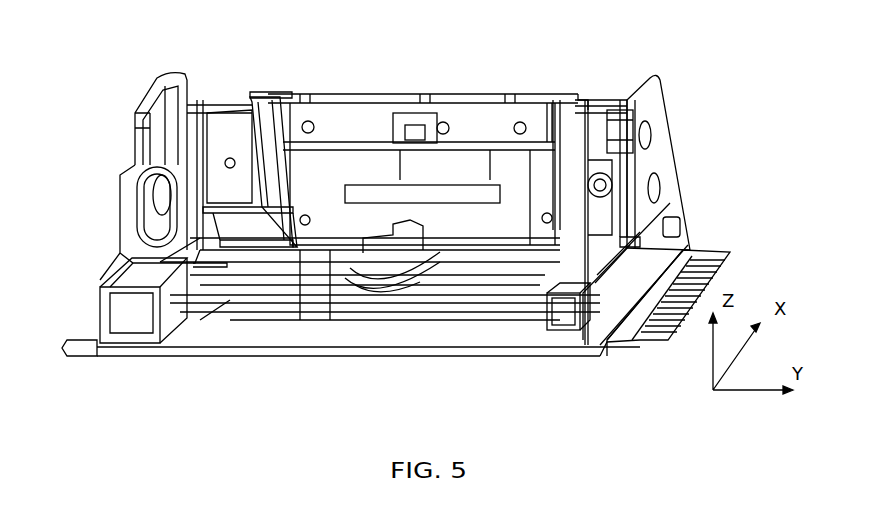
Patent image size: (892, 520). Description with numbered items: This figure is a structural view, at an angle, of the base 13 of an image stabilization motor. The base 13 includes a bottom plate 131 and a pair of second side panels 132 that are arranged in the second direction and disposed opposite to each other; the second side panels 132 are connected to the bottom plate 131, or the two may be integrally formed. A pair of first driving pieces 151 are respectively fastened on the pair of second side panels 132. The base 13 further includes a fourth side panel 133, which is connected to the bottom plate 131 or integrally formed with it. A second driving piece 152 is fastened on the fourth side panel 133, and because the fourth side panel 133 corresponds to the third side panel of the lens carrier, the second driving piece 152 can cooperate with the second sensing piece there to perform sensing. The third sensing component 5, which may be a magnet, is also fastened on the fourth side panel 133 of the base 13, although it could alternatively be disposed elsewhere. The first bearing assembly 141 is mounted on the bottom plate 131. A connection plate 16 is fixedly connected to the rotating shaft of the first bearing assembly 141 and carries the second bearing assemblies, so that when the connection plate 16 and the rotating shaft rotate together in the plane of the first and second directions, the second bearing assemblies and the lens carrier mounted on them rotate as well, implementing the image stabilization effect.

The base 13 is at (666, 37).
The bottom plate 131 is at (193, 344).
The second side panels 132 is at (158, 84).
The fourth side panel 133 is at (270, 110).
The first driving pieces 151 is at (186, 84).
The second driving piece 152 is at (470, 160).
The third sensing component 5 is at (370, 110).
The first bearing assembly 141 is at (380, 282).
The connection plate 16 is at (513, 267).